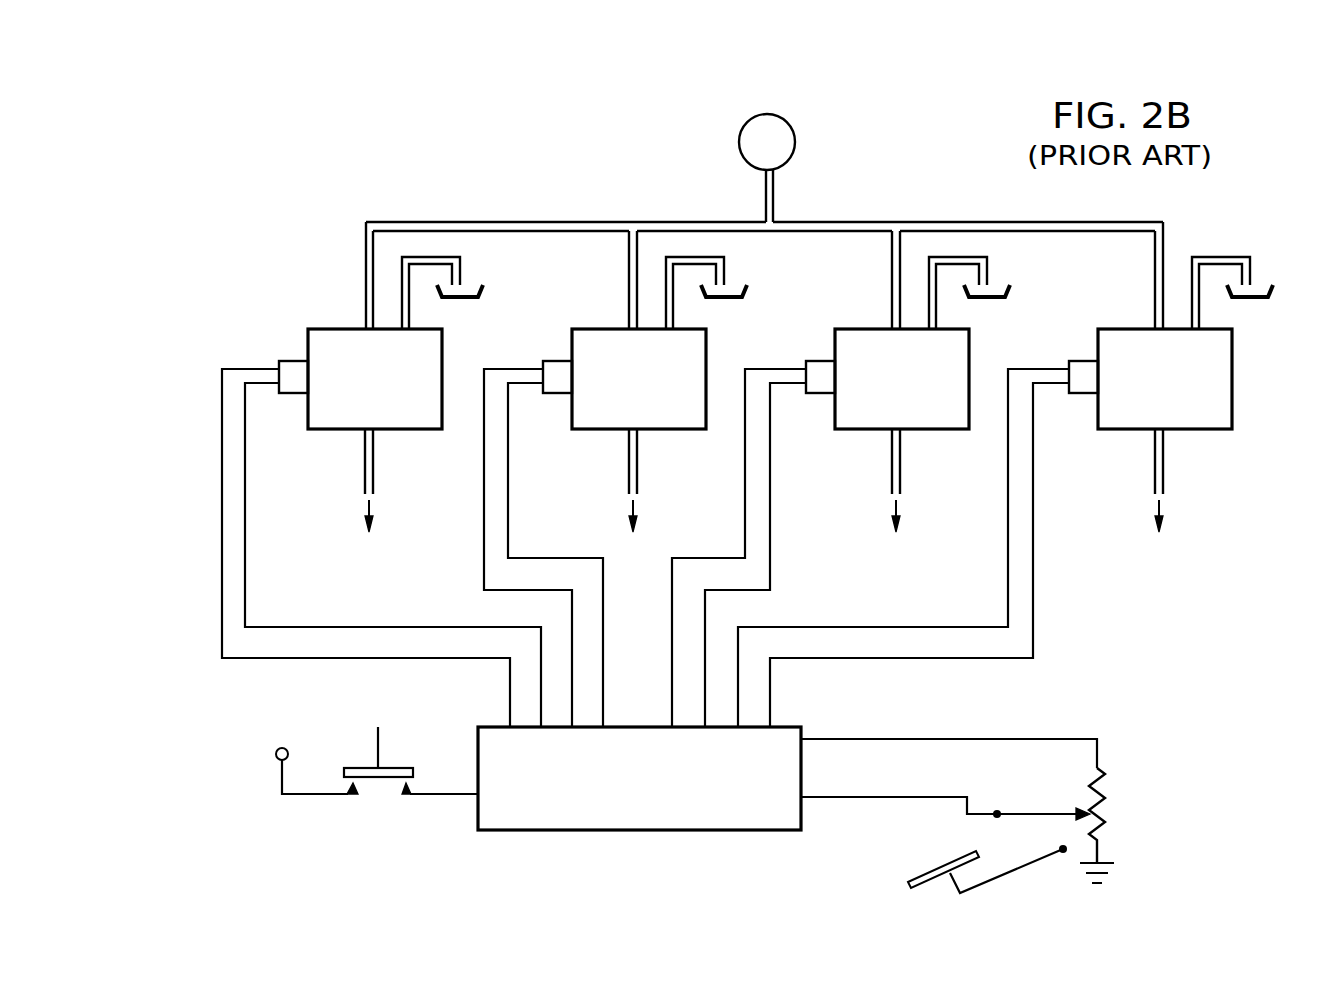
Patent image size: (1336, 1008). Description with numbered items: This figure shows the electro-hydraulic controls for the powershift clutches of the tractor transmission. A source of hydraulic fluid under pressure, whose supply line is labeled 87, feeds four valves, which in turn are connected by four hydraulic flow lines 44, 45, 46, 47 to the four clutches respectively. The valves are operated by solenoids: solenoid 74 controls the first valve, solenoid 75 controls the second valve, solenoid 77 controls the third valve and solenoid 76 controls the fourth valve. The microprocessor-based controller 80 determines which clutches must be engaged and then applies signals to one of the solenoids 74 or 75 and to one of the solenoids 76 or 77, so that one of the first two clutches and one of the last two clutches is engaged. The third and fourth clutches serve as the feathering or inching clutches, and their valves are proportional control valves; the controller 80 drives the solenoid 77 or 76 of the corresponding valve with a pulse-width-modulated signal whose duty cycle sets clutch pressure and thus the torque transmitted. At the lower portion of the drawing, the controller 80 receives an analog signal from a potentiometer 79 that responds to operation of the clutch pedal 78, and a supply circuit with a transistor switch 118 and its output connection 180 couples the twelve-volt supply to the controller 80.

The pressure source 87 is at (774, 198).
The solenoid 74 is at (278, 362).
The solenoid 75 is at (542, 362).
The solenoid 77 is at (805, 362).
The solenoid 76 is at (1068, 362).
The hydraulic flow line 44 is at (373, 483).
The hydraulic flow line 45 is at (637, 483).
The hydraulic flow line 46 is at (900, 483).
The hydraulic flow line 47 is at (1163, 483).
The controller 80 is at (804, 728).
The transistor switch 118 is at (379, 749).
The switch output line 180 is at (404, 790).
The potentiometer 79 is at (1106, 803).
The clutch pedal 78 is at (917, 875).